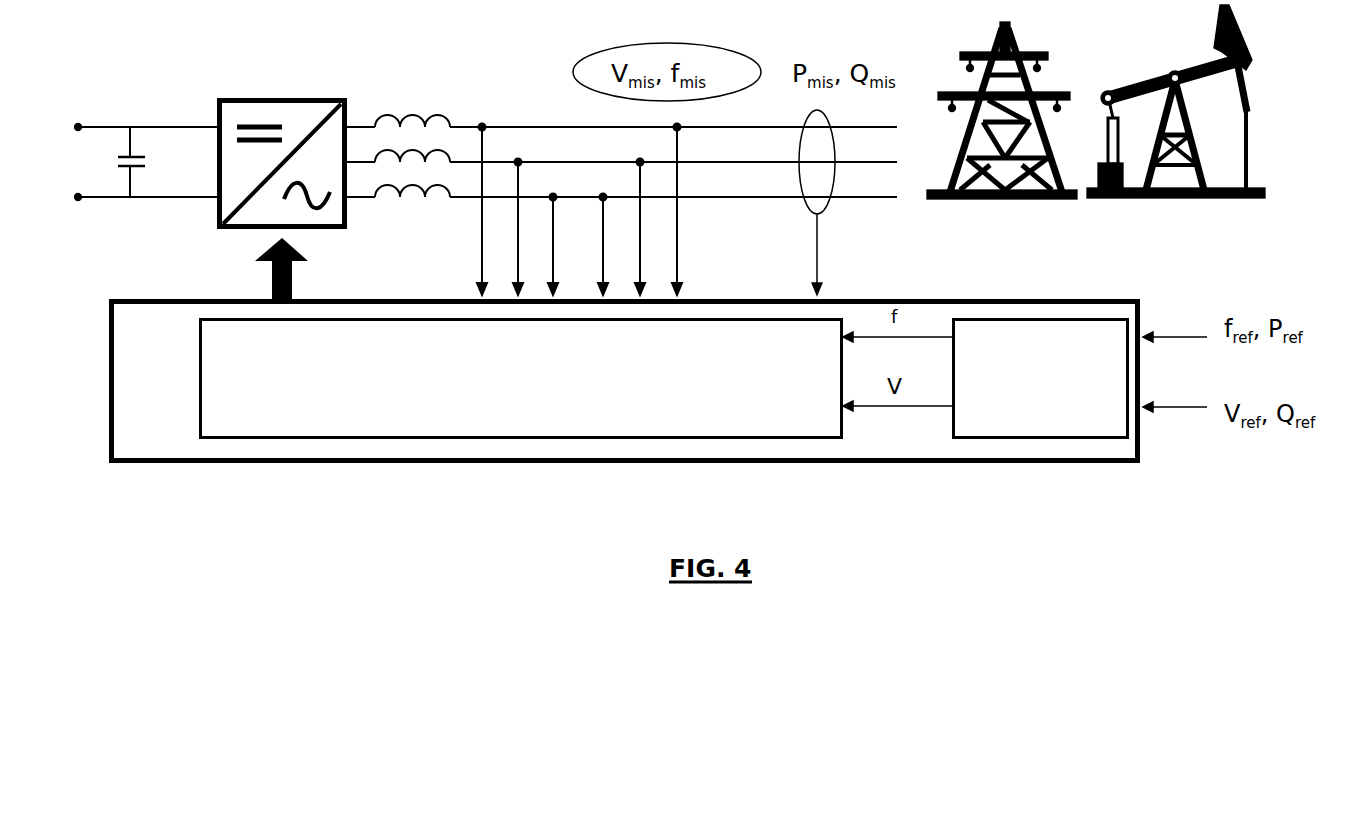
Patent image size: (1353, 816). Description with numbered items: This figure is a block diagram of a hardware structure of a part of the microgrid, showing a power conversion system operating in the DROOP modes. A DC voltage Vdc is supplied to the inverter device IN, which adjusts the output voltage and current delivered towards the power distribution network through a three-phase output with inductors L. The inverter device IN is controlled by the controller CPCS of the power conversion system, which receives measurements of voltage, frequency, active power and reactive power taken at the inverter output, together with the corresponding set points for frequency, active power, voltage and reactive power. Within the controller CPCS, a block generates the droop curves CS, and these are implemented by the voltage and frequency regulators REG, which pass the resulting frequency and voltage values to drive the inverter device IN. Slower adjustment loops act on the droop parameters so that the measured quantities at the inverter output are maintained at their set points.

The DC voltage source Vdc is at (141, 162).
The inverter device IN is at (282, 178).
The inductors L is at (398, 127).
The controller of the power conversion system CPCS is at (165, 420).
The voltage and frequency regulators REG is at (387, 417).
The droop curves CS is at (1027, 417).